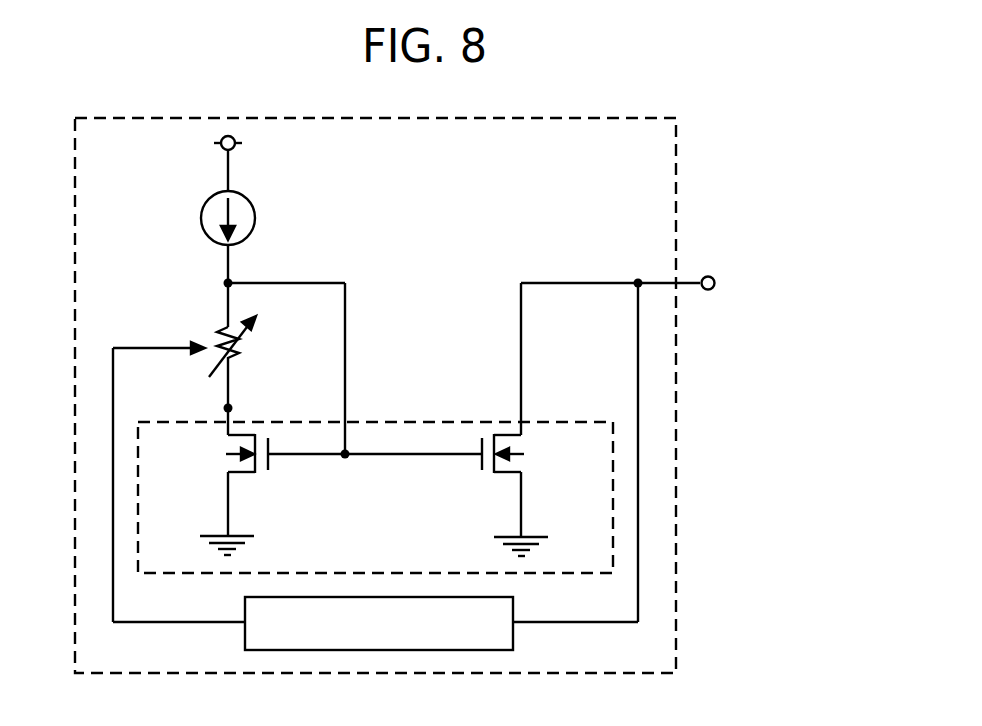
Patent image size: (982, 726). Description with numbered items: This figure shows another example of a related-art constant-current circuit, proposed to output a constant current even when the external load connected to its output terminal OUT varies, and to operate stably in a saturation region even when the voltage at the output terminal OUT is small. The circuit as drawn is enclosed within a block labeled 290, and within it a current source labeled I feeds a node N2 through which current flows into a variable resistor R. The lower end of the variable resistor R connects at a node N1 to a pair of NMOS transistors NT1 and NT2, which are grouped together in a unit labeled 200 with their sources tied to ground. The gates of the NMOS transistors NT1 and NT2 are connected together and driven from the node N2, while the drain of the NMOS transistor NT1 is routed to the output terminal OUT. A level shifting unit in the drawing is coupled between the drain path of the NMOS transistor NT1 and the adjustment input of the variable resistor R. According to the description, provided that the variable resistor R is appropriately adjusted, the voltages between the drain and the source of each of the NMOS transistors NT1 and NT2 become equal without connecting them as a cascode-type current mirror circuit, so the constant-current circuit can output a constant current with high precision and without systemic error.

The output circuit block 290 is at (678, 138).
The transistor unit 200 is at (573, 413).
The NMOS transistor NT1 is at (529, 495).
The NMOS transistor NT2 is at (255, 494).
The variable resistor R is at (240, 346).
The current source I is at (238, 218).
The first node N1 is at (247, 409).
The second node N2 is at (210, 283).
The output terminal OUT is at (736, 284).